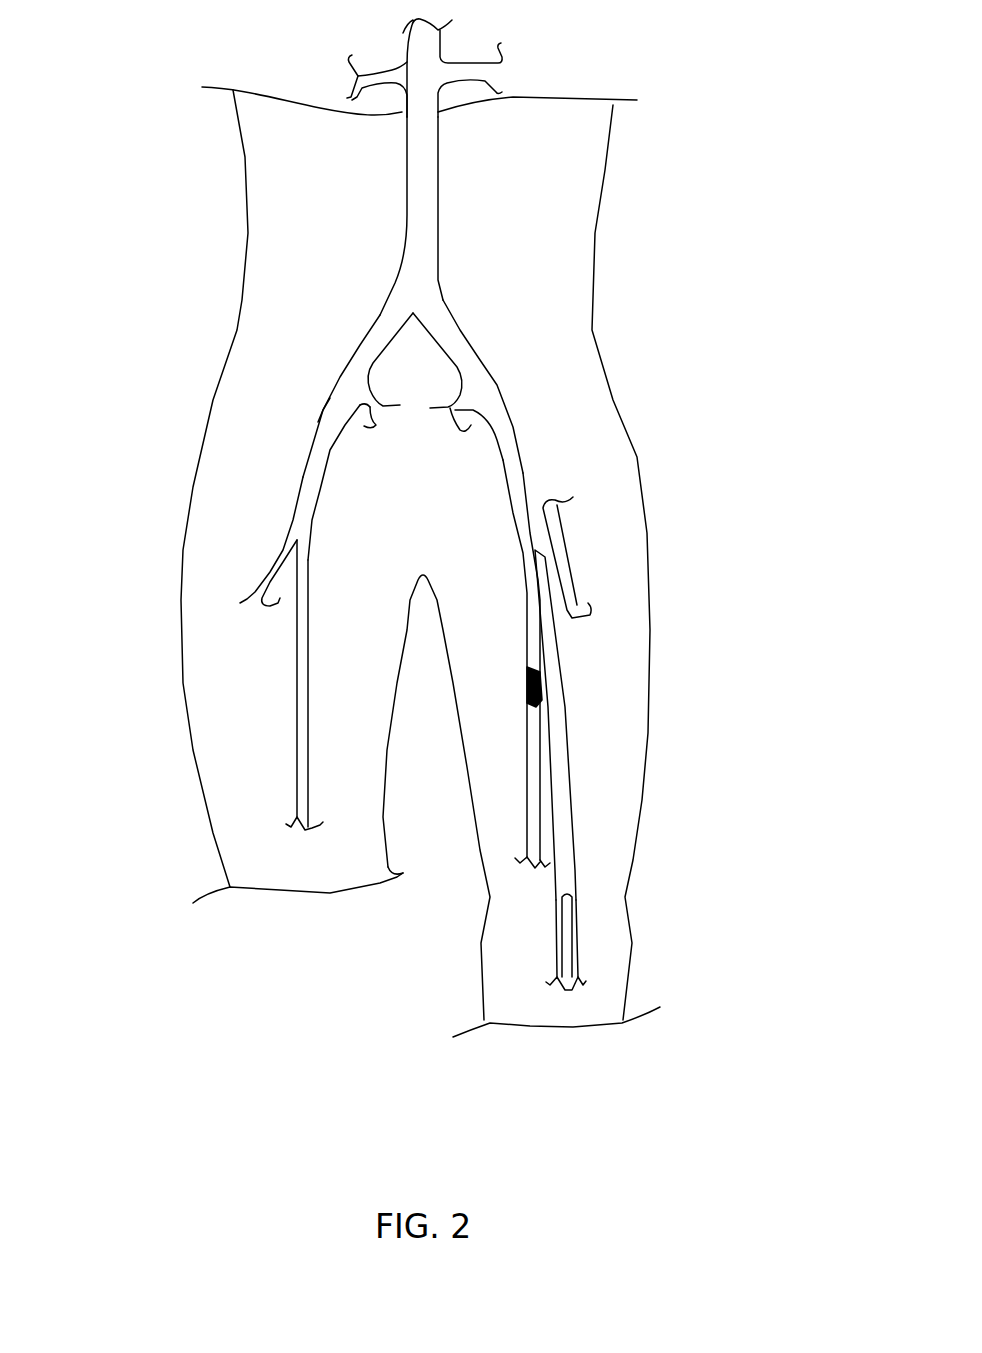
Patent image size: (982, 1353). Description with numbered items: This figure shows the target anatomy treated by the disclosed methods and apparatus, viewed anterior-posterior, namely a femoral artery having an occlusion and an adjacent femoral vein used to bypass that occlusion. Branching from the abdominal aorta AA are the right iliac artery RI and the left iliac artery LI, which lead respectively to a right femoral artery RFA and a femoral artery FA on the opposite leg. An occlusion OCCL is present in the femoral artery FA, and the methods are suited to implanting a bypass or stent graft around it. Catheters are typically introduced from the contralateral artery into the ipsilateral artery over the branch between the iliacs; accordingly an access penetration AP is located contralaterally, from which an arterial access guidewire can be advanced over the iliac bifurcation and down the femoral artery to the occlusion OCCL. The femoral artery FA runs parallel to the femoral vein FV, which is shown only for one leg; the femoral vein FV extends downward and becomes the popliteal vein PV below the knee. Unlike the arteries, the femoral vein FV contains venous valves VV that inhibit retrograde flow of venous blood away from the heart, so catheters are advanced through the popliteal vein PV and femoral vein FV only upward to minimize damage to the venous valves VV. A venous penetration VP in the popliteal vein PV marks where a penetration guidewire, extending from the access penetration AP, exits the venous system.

The abdominal aorta AA is at (420, 243).
The right iliac artery RI is at (380, 342).
The left iliac artery LI is at (455, 348).
The access penetration AP is at (327, 410).
The right femoral artery RFA is at (303, 475).
The femoral artery FA is at (518, 483).
The occlusion OCCL is at (543, 660).
The femoral vein FV is at (567, 765).
The venous valves VV is at (573, 893).
The popliteal vein PV is at (577, 947).
The venous penetration VP is at (583, 983).